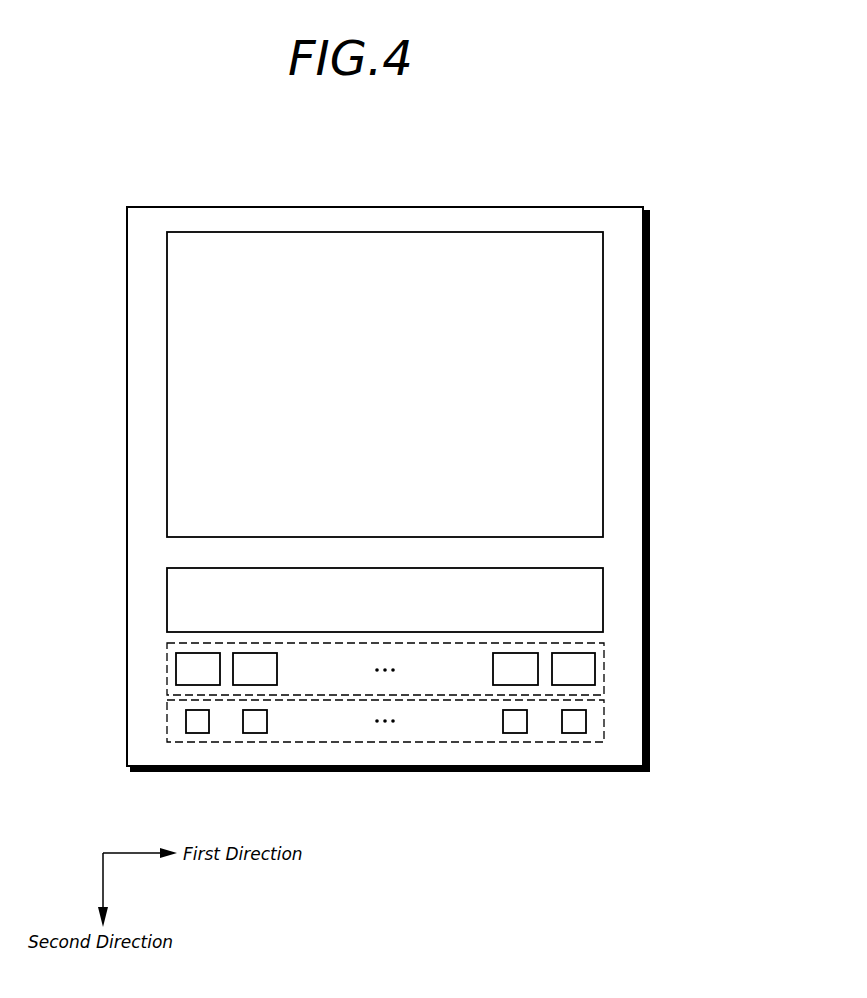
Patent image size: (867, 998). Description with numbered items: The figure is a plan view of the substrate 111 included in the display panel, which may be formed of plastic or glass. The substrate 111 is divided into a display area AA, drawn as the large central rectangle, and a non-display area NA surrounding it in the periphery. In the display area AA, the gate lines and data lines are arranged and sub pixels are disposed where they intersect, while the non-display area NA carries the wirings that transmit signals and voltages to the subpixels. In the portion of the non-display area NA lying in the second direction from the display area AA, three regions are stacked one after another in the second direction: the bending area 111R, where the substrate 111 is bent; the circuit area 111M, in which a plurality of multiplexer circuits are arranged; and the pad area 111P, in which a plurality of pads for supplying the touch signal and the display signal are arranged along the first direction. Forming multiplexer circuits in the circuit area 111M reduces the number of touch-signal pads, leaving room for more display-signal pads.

The substrate 111 is at (650, 245).
The display area AA is at (218, 232).
The non-display area NA is at (632, 280).
The bending area 111R is at (167, 590).
The circuit area 111M is at (167, 654).
The pad area 111P is at (167, 712).